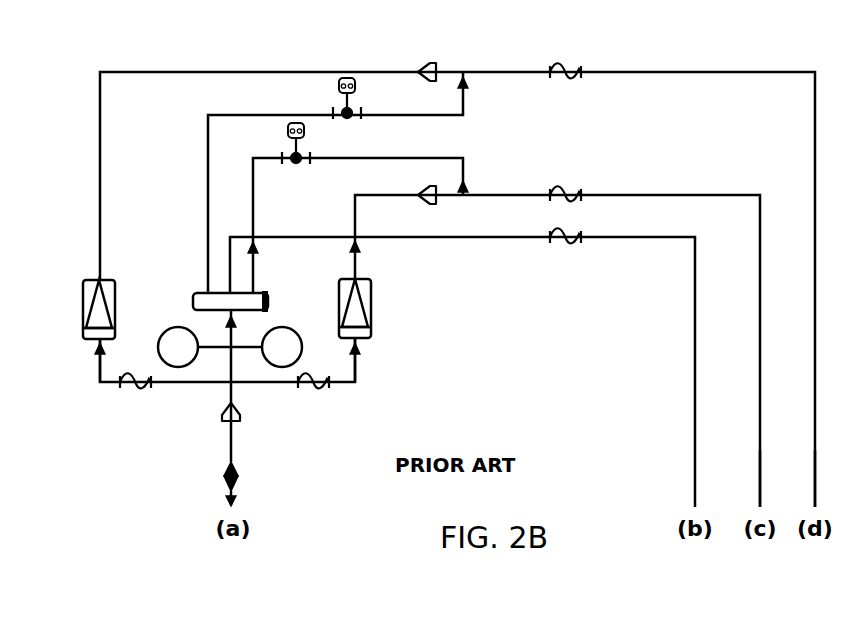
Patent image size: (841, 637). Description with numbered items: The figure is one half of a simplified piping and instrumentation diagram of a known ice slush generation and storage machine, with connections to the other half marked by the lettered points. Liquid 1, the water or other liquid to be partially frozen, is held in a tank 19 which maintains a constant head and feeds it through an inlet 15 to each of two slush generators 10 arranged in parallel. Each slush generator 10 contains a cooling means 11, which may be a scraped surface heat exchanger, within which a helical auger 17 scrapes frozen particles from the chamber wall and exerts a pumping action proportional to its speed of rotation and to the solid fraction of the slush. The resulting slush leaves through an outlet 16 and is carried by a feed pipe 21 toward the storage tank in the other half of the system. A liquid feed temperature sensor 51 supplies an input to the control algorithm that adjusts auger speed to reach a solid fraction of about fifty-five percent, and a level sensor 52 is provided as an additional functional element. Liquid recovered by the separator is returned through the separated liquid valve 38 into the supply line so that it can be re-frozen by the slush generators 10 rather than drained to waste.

The liquid 1 is at (233, 441).
The slush generator 10 is at (269, 293).
The cooling means 11 is at (269, 293).
The inlet 15 is at (100, 356).
The outlet 16 is at (99, 280).
The auger 17 is at (112, 310).
The tank 19 is at (264, 290).
The feed pipe 21 is at (813, 448).
The separated liquid valve 38 is at (238, 477).
The liquid feed temperature sensor 51 is at (292, 329).
The level sensor 52 is at (161, 347).